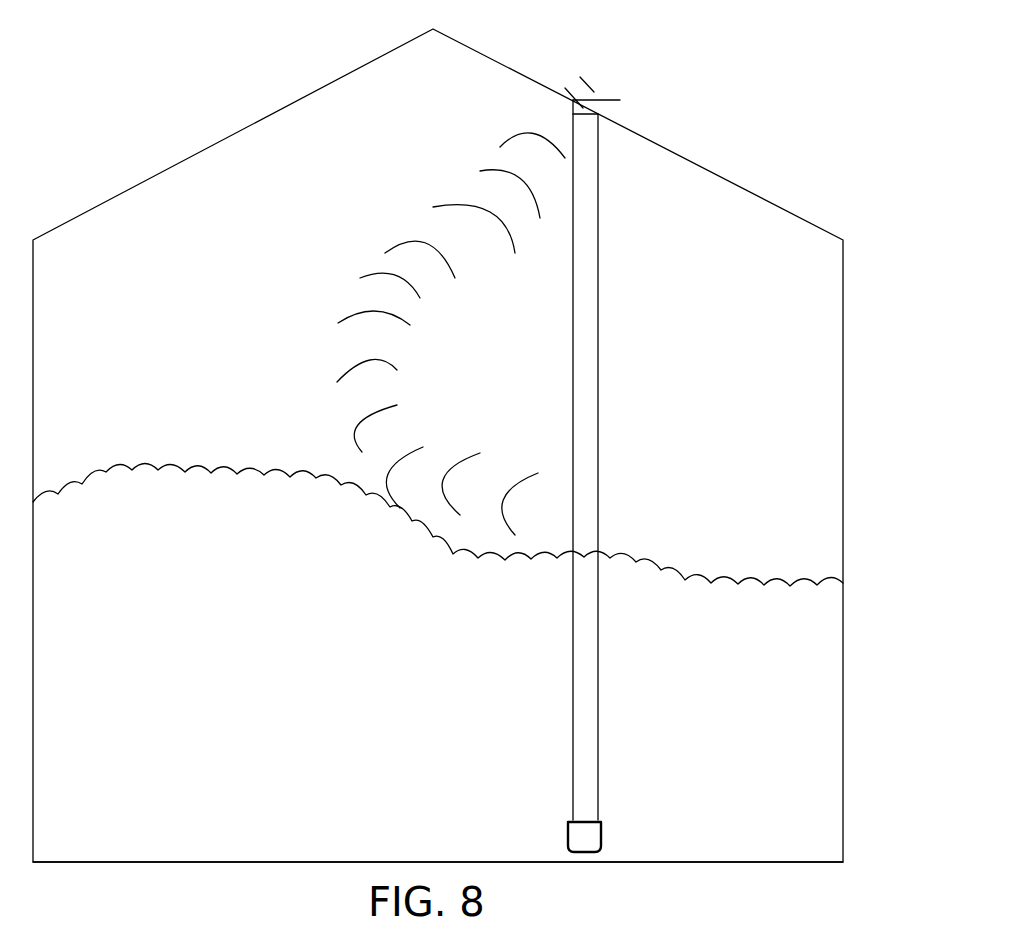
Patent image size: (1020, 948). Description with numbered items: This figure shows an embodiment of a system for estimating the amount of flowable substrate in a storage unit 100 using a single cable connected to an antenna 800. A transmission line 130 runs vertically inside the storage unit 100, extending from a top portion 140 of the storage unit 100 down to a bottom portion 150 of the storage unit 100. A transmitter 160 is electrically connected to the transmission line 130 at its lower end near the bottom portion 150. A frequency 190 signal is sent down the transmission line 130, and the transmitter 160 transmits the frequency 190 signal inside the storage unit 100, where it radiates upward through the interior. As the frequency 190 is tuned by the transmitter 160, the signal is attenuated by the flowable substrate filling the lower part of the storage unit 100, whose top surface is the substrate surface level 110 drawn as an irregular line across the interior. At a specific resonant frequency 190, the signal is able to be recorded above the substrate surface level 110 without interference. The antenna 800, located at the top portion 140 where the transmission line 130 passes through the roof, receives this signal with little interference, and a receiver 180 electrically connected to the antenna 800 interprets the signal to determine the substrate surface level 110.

The storage unit 100 is at (860, 392).
The substrate surface level 110 is at (455, 557).
The transmission line 130 is at (599, 333).
The top portion 140 is at (592, 118).
The bottom portion 150 is at (435, 850).
The transmitter 160 is at (603, 838).
The receiver 180 is at (578, 103).
The frequency 190 is at (360, 277).
The antenna 800 is at (612, 100).